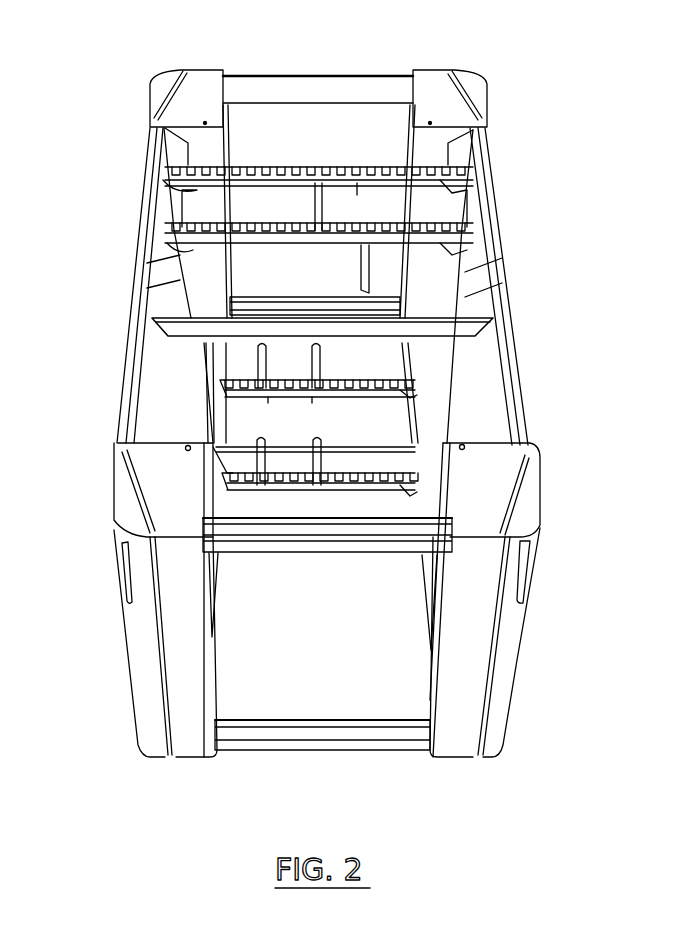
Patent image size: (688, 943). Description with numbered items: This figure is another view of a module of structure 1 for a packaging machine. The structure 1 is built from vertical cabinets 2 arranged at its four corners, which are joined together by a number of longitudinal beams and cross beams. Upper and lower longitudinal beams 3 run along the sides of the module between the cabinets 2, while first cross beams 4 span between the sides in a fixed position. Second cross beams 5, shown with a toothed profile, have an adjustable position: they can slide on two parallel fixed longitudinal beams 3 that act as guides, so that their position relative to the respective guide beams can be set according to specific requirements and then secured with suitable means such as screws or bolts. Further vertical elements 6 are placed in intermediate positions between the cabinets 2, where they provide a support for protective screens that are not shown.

The structure 1 is at (567, 286).
The vertical cabinet 2 is at (166, 78).
The longitudinal beam 3 is at (155, 203).
The first cross beam 4 is at (340, 82).
The second cross beam 5 is at (290, 167).
The vertical element 6 is at (163, 272).